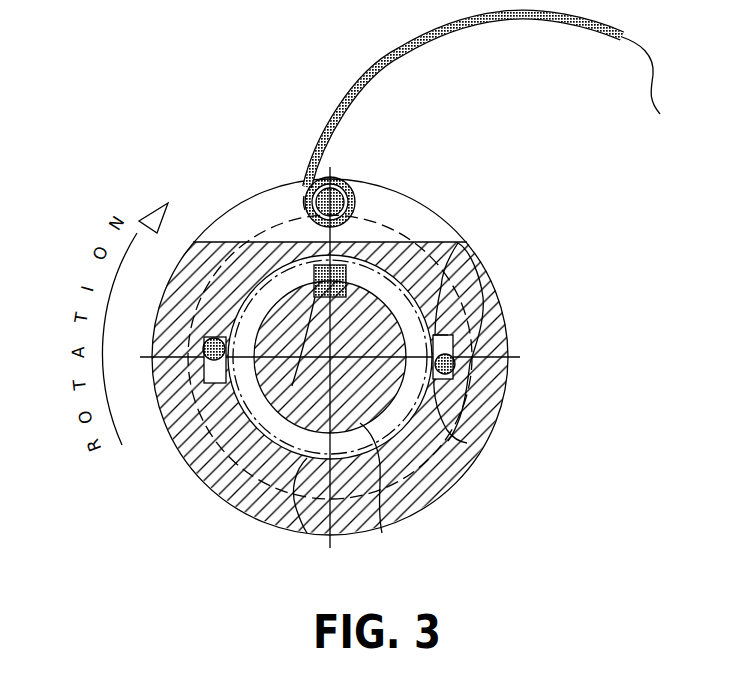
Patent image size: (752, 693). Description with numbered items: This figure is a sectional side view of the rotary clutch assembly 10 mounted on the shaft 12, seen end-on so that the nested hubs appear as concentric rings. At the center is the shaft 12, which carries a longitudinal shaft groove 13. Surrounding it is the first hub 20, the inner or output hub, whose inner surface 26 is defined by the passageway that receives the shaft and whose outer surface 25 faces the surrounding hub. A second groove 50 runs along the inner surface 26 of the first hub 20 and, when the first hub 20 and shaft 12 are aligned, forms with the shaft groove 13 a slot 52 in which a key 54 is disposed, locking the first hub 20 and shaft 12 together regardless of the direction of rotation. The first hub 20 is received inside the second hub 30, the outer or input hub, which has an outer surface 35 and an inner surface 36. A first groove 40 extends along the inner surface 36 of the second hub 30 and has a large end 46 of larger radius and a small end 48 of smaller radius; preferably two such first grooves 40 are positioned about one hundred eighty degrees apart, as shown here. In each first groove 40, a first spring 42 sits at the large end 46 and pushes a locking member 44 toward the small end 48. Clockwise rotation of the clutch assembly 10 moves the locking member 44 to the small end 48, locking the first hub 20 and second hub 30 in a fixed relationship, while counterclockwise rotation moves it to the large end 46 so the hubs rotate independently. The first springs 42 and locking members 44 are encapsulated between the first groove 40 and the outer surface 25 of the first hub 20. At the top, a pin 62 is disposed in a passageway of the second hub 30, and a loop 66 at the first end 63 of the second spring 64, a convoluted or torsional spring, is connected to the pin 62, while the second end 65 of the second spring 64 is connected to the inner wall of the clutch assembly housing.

The rotary clutch assembly 10 is at (620, 316).
The shaft 12 is at (269, 448).
The groove in shaft 13 is at (292, 386).
The first hub 20 is at (260, 300).
The outer surface of first hub 25 is at (307, 533).
The inner surface of first hub 26 is at (383, 533).
The second hub 30 is at (268, 255).
The outer surface of second hub 35 is at (507, 330).
The inner surface of second hub 36 is at (430, 248).
The first groove 40 is at (504, 404).
The first spring 42 is at (466, 414).
The locking member 44 is at (464, 324).
The large end of first groove 46 is at (455, 450).
The small end of first groove 48 is at (452, 289).
The second groove 50 is at (380, 250).
The slot 52 is at (257, 296).
The key 54 is at (366, 238).
The pin 62 is at (282, 157).
The first end of second spring 63 is at (326, 178).
The second spring 64 is at (349, 60).
The second end of second spring 65 is at (648, 84).
The loop 66 is at (303, 210).